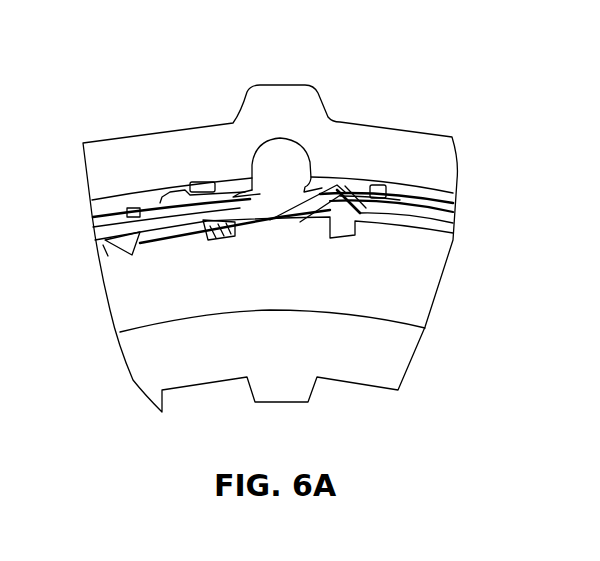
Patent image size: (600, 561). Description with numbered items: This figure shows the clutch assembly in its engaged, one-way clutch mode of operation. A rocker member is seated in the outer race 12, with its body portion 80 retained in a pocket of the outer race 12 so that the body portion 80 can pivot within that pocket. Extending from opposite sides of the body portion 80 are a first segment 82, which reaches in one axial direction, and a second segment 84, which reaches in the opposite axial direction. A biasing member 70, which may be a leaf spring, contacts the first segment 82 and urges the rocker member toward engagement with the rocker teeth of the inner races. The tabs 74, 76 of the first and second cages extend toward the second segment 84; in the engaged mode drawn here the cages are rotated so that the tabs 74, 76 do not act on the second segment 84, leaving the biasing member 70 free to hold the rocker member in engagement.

The outer race 12 is at (140, 162).
The biasing member 70 is at (244, 195).
The body portion 80 is at (263, 165).
The first segment 82 is at (223, 224).
The second segment 84 is at (317, 195).
The tab 74 is at (353, 193).
The tab 76 is at (370, 198).